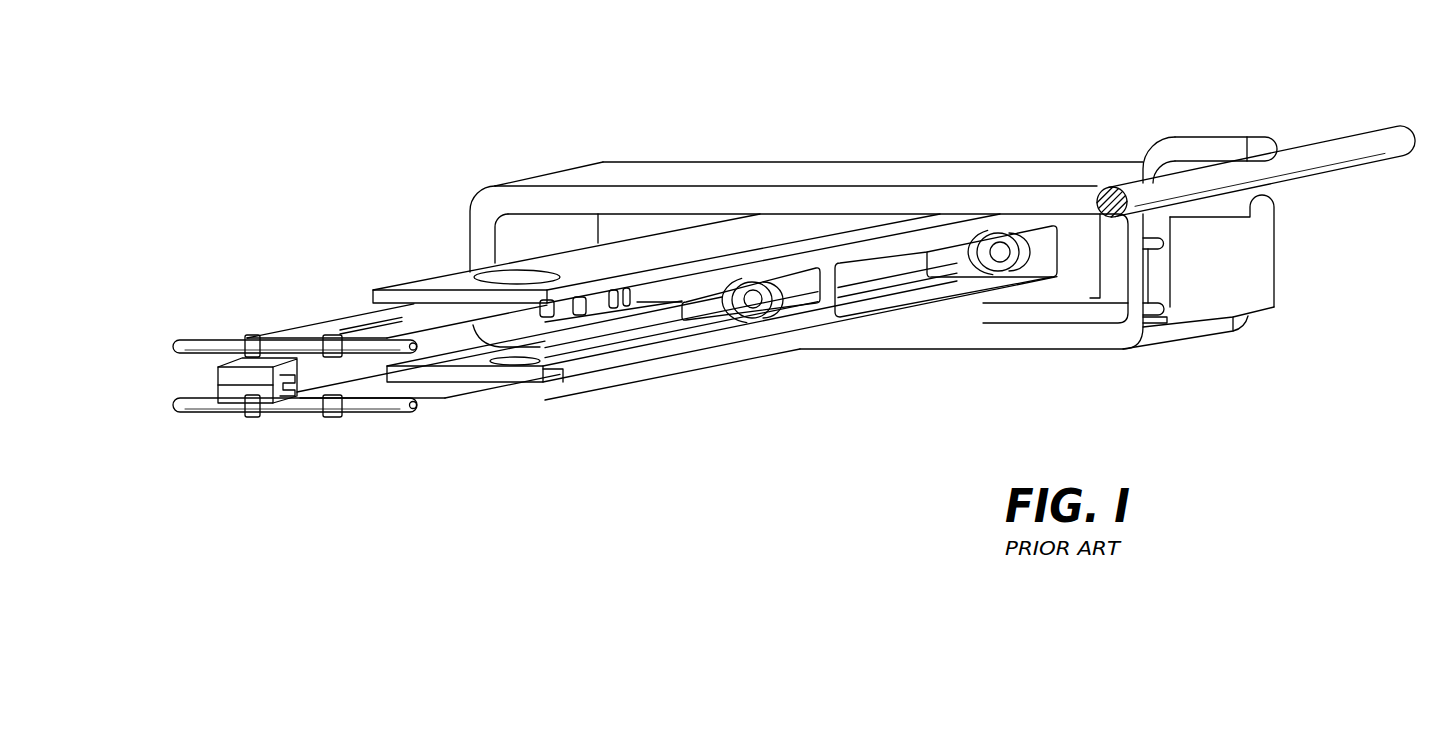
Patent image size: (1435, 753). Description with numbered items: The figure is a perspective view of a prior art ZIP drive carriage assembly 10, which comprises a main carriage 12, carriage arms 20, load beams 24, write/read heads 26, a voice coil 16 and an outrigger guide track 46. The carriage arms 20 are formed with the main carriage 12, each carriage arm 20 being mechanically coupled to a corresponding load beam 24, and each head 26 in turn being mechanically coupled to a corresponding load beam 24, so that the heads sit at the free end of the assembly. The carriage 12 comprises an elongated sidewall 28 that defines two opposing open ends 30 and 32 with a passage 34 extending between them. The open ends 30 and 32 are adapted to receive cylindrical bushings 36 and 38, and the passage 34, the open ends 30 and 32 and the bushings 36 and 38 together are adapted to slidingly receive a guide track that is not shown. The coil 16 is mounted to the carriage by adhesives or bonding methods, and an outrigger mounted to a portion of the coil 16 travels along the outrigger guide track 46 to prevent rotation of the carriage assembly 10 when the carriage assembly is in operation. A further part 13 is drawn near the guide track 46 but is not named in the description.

The carriage assembly 10 is at (925, 78).
The main carriage 12 is at (779, 303).
The bracket 13 is at (1223, 137).
The voice coil 16 is at (910, 162).
The carriage arms 20 is at (447, 280).
The load beams 24 is at (347, 318).
The write/read heads 26 is at (217, 375).
The elongated sidewall 28 is at (863, 328).
The open end 30 is at (756, 318).
The open end 32 is at (1000, 272).
The passage 34 is at (884, 270).
The cylindrical bushing 36 is at (751, 294).
The cylindrical bushing 38 is at (1000, 250).
The outrigger guide track 46 is at (1372, 136).